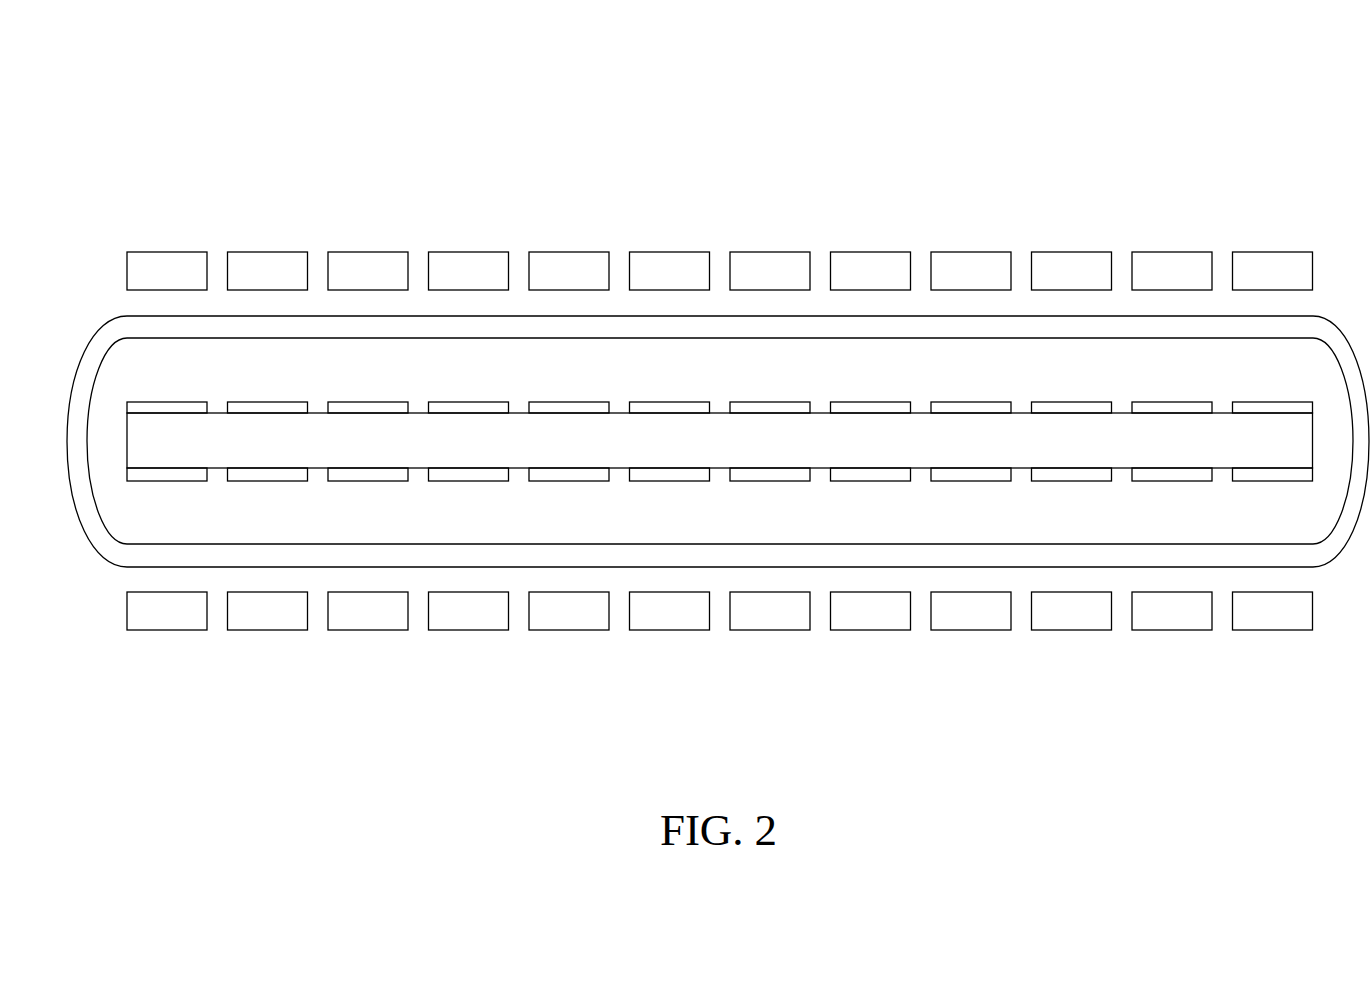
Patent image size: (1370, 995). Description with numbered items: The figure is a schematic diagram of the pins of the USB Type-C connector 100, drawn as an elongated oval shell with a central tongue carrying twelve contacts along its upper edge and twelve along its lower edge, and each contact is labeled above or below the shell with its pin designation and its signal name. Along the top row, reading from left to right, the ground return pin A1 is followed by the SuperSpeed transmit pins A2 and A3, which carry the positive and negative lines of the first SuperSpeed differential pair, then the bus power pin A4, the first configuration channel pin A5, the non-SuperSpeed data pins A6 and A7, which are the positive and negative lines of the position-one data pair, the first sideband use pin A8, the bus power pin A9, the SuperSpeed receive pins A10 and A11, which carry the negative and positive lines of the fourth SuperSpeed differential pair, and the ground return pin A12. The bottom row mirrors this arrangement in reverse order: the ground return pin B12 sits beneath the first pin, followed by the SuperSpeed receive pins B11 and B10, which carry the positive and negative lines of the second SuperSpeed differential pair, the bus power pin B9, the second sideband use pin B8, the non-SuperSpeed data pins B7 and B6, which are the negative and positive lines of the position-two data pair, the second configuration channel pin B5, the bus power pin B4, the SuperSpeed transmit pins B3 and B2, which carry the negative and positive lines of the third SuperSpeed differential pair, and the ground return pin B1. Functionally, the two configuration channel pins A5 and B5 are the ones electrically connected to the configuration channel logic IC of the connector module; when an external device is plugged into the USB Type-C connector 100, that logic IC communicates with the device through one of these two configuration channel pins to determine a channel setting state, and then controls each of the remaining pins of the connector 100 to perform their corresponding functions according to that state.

The USB Type-C connector 100 is at (1144, 140).
The GND pin A1 is at (167, 311).
The SSTx1 pin A2 is at (268, 311).
The SSTx1 pin A3 is at (368, 311).
The VBUS pin A4 is at (469, 311).
The CC1 pin A5 is at (569, 311).
The D+ pin A6 is at (670, 311).
The D− pin A7 is at (770, 311).
The SBU1 pin A8 is at (871, 311).
The VBUS pin A9 is at (971, 311).
The SSRx2 pin A10 is at (1072, 311).
The SSRx2 pin A11 is at (1172, 311).
The GND pin A12 is at (1273, 311).
The GND pin B1 is at (1273, 571).
The SSTx2 pin B2 is at (1172, 571).
The SSTx2 pin B3 is at (1072, 571).
The VBUS pin B4 is at (971, 571).
The CC2 pin B5 is at (871, 571).
The D+ pin B6 is at (770, 571).
The D− pin B7 is at (670, 571).
The SBU2 pin B8 is at (569, 571).
The VBUS pin B9 is at (469, 571).
The SSRx1 pin B10 is at (368, 571).
The SSRx1 pin B11 is at (268, 571).
The GND pin B12 is at (167, 571).